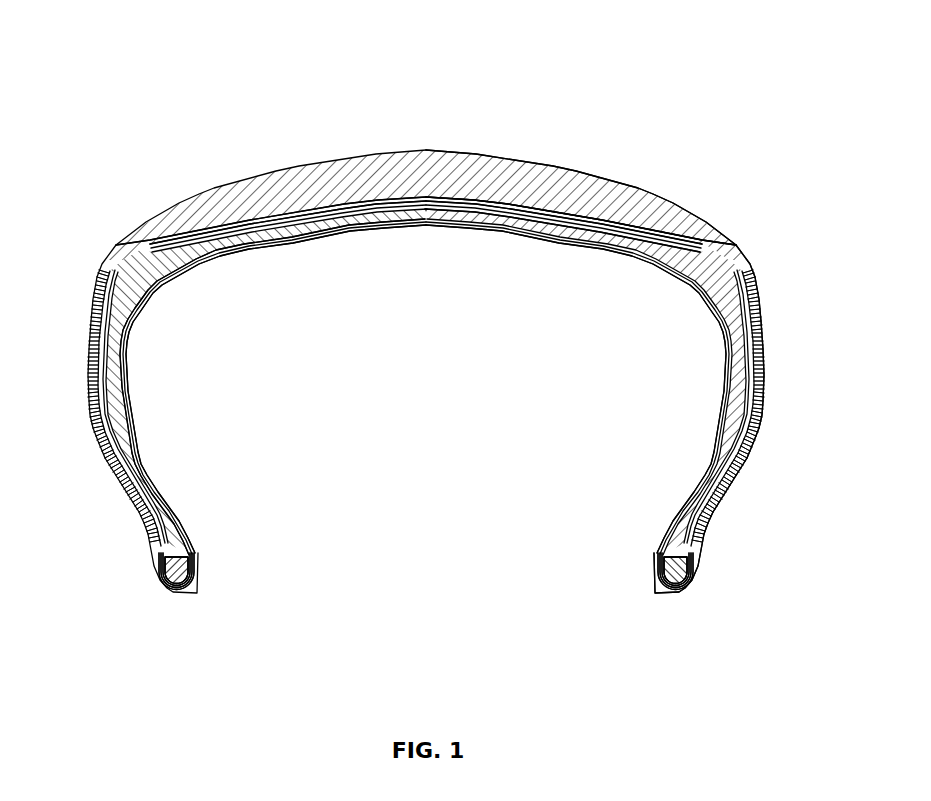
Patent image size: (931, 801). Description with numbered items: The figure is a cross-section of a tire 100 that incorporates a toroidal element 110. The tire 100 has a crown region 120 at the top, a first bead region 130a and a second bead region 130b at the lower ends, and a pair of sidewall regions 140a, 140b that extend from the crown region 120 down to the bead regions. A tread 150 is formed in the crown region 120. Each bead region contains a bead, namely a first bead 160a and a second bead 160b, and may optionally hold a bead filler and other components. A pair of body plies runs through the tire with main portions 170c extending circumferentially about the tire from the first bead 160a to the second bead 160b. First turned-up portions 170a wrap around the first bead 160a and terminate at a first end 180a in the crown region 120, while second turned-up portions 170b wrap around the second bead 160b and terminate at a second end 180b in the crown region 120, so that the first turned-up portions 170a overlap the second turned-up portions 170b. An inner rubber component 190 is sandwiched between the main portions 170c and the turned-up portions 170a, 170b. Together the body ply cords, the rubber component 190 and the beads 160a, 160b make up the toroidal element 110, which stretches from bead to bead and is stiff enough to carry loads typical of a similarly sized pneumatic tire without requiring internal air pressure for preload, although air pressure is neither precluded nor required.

The tire 100 is at (126, 58).
The toroidal element 110 is at (729, 260).
The crown region 120 is at (768, 168).
The first bead region 130a is at (768, 544).
The second bead region 130b is at (82, 544).
The sidewall region 140a is at (768, 252).
The sidewall region 140b is at (82, 252).
The tread 150 is at (456, 172).
The first bead 160a is at (672, 572).
The second bead 160b is at (174, 580).
The first turned-up portions 170a is at (566, 214).
The second turned-up portions 170b is at (257, 212).
The main portions 170c is at (217, 246).
The first end 180a is at (300, 213).
The second end 180b is at (553, 205).
The inner rubber component 190 is at (637, 236).